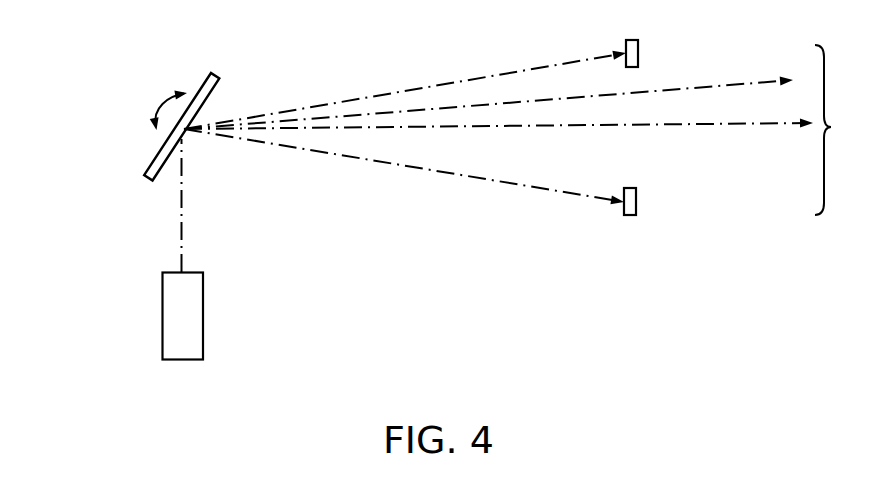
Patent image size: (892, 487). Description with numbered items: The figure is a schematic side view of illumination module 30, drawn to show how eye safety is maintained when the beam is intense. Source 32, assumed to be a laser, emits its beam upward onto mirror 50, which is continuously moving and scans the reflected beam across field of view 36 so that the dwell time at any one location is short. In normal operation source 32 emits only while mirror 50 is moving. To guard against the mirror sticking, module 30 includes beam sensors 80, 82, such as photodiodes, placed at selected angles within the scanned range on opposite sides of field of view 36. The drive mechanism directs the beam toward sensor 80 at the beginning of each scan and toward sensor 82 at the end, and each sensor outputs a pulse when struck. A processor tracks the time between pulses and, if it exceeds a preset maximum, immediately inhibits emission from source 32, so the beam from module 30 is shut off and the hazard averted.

The illumination module 30 is at (84, 81).
The mirror 50 is at (201, 79).
The source 32 is at (203, 315).
The beam sensor 80 is at (638, 47).
The beam sensor 82 is at (636, 197).
The field of view 36 is at (523, 130).